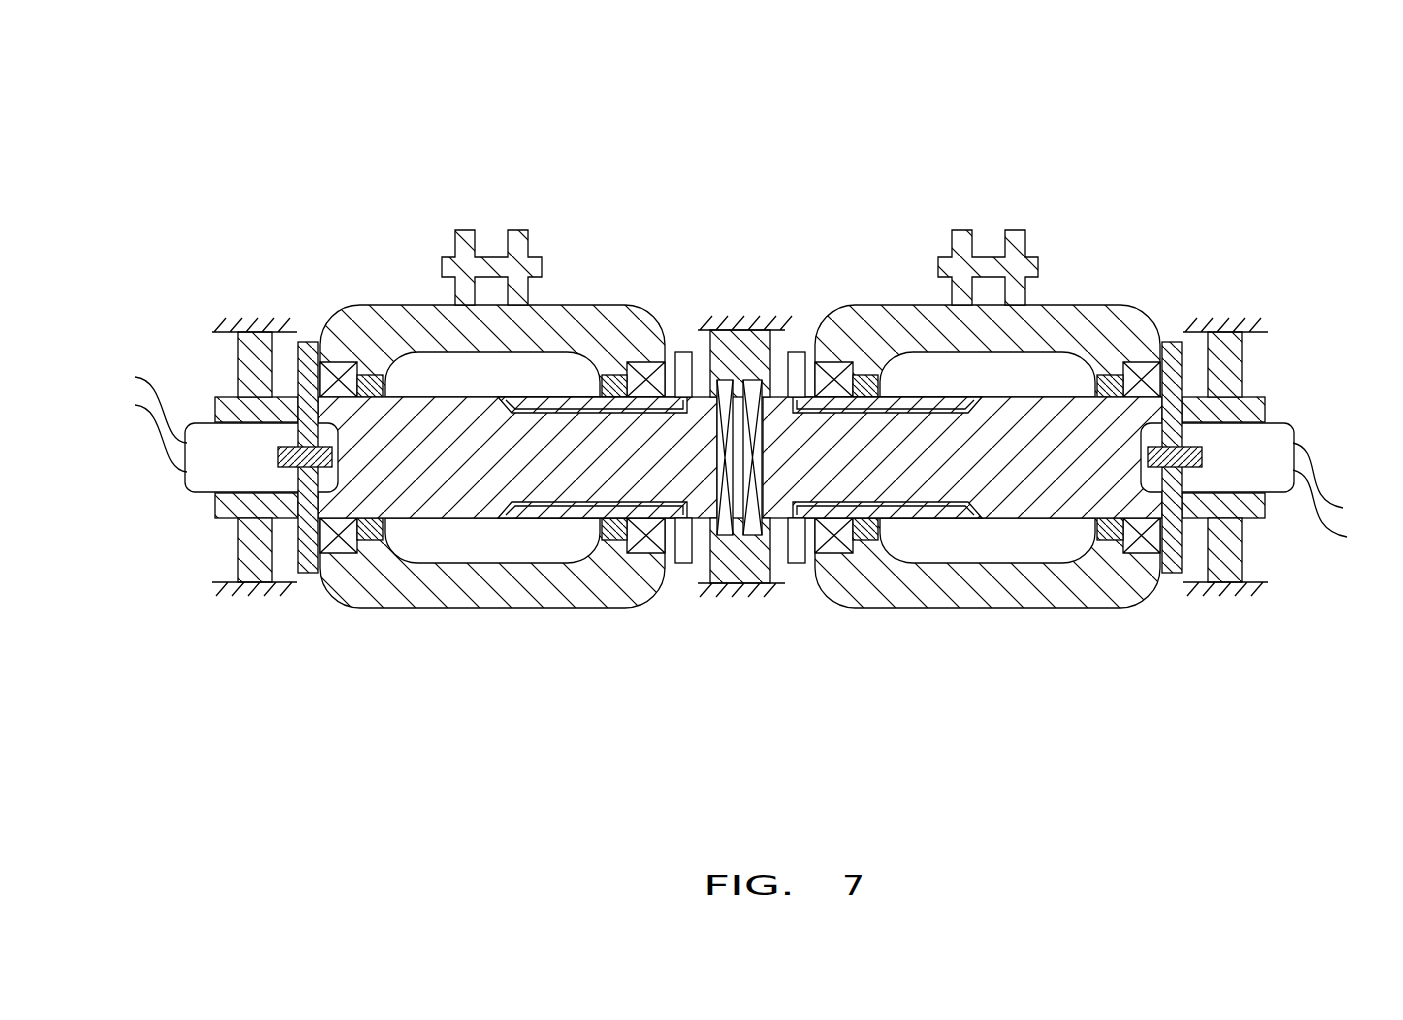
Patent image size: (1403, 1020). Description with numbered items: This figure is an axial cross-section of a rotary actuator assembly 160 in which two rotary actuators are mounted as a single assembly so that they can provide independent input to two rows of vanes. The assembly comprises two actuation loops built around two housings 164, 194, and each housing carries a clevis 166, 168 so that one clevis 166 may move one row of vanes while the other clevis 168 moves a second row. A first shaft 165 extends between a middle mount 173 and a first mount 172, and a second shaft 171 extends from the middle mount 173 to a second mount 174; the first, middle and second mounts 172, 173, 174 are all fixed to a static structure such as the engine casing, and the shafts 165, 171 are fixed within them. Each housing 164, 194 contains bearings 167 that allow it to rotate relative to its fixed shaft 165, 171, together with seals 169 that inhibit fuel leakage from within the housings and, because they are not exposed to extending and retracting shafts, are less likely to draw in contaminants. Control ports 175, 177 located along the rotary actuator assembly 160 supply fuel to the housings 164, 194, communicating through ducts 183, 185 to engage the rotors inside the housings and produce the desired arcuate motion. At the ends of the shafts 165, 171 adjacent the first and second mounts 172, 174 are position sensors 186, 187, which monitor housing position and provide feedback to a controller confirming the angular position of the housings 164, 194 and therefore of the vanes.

The rotary actuator assembly 160 is at (768, 390).
The housing 164 is at (598, 250).
The housing 194 is at (1118, 237).
The clevis 166 is at (474, 200).
The clevis 168 is at (975, 205).
The bearings 167 is at (342, 366).
The seals 169 is at (597, 388).
The first shaft 165 is at (478, 480).
The second shaft 171 is at (1005, 475).
The duct 183 is at (537, 415).
The duct 185 is at (620, 502).
The control port 175 is at (683, 352).
The control port 177 is at (680, 565).
The first mount 172 is at (243, 622).
The second mount 174 is at (1271, 282).
The middle mount 173 is at (720, 632).
The position sensor 186 is at (212, 447).
The position sensor 187 is at (1260, 448).